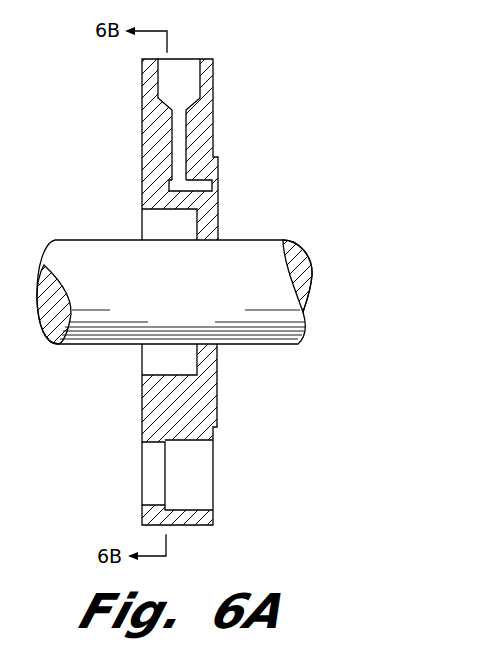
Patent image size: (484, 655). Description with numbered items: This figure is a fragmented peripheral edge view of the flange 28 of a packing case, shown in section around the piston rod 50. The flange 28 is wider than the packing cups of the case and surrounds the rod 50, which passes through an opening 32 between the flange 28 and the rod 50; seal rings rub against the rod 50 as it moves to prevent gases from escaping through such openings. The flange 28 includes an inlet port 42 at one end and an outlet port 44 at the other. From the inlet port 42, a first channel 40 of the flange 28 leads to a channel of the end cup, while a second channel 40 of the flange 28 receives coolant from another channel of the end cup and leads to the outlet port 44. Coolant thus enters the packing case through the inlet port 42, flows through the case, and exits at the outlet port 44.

The flange 28 is at (289, 65).
The opening 32 is at (222, 236).
The channel 40 is at (178, 130).
The inlet port 42 is at (172, 80).
The outlet port 44 is at (150, 470).
The piston rod 50 is at (300, 262).